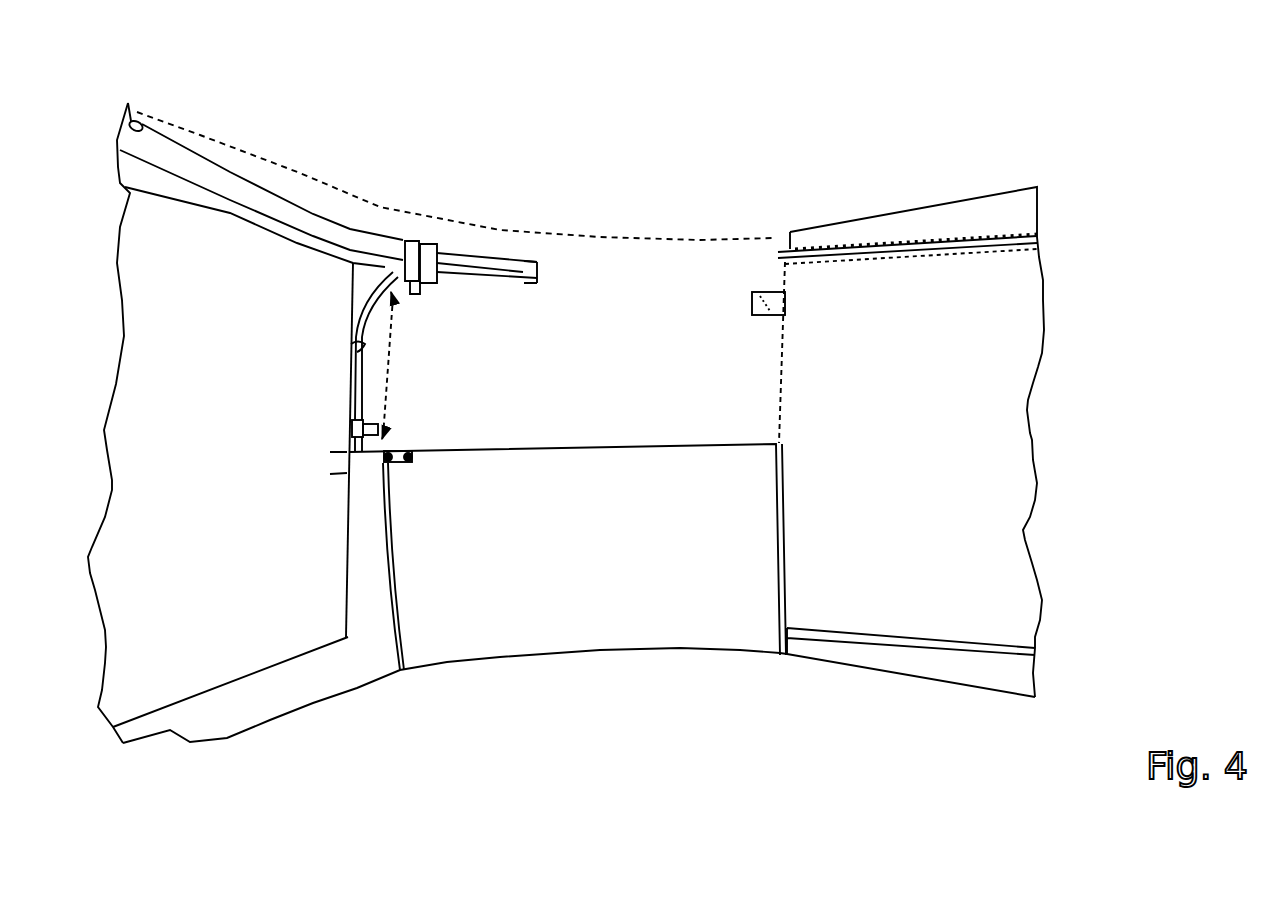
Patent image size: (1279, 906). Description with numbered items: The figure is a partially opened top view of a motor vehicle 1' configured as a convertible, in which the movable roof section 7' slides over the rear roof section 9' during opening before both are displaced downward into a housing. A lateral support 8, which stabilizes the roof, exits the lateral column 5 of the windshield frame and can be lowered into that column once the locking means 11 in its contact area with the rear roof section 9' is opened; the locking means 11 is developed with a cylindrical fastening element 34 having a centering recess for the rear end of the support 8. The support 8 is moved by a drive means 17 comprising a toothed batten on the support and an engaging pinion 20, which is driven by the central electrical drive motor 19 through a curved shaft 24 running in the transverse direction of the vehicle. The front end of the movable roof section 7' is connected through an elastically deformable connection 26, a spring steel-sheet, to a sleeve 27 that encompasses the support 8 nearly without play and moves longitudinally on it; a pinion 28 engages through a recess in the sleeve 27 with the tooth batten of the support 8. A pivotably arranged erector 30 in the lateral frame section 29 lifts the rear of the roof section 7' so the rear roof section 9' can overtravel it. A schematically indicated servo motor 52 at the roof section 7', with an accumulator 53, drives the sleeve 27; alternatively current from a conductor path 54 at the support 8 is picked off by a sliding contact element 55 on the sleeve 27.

The motor vehicle 1' is at (677, 100).
The lateral column 5 is at (314, 220).
The pinion 20 is at (385, 267).
The elastically deformable connection 26 is at (422, 263).
The sleeve 27 is at (440, 252).
The contact element 55 is at (440, 265).
The lateral support 8 is at (499, 263).
The pinion 28 is at (435, 283).
The conductor path 54 is at (523, 275).
The curved shaft 24 is at (358, 372).
The accumulator 53 is at (388, 457).
The drive motor 19 is at (383, 437).
The drive means 17 is at (392, 294).
The movable roof section 7' is at (568, 613).
The servo motor 52 is at (410, 463).
The erector 30 is at (778, 257).
The lateral frame section 29 is at (888, 228).
The rear roof section 9' is at (956, 162).
The locking means 11 is at (743, 307).
The cylindrical fastening element 34 is at (773, 303).